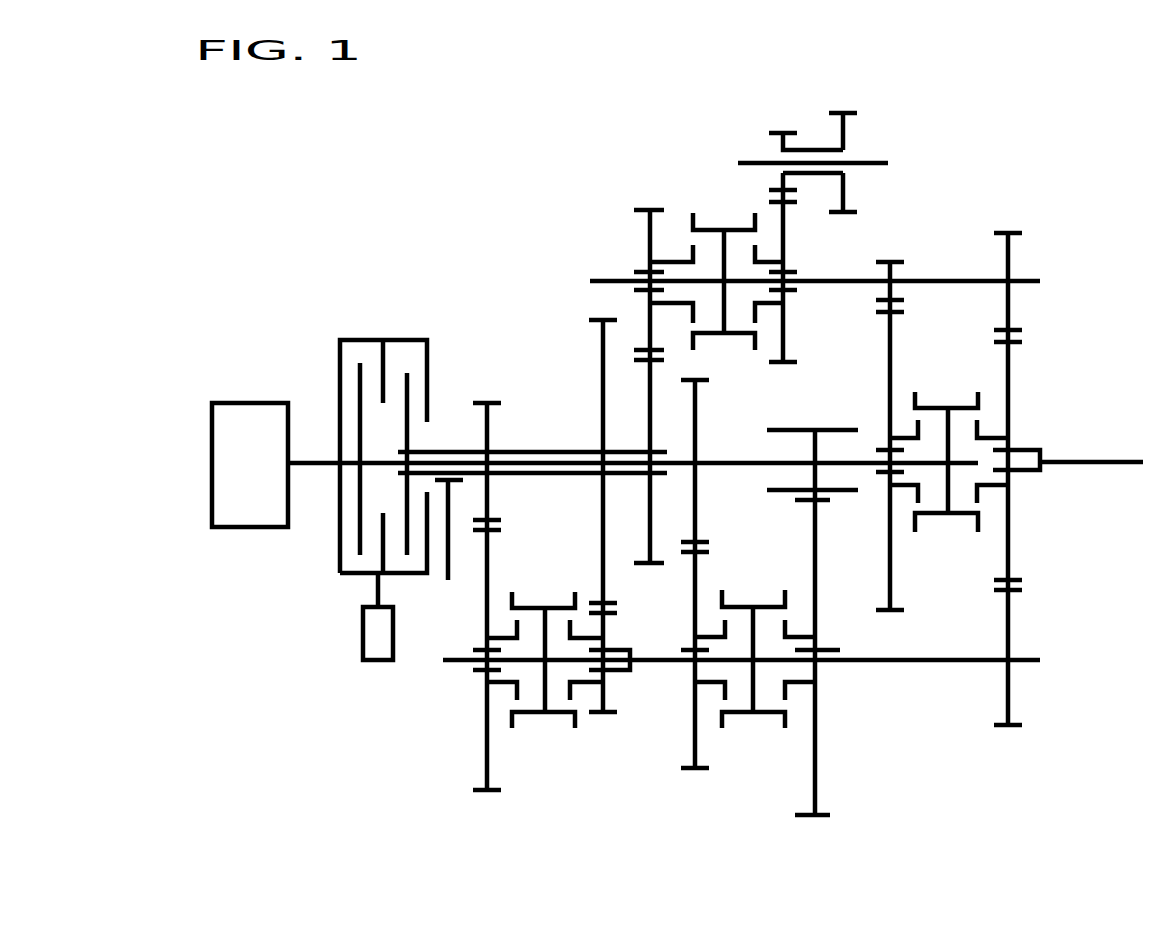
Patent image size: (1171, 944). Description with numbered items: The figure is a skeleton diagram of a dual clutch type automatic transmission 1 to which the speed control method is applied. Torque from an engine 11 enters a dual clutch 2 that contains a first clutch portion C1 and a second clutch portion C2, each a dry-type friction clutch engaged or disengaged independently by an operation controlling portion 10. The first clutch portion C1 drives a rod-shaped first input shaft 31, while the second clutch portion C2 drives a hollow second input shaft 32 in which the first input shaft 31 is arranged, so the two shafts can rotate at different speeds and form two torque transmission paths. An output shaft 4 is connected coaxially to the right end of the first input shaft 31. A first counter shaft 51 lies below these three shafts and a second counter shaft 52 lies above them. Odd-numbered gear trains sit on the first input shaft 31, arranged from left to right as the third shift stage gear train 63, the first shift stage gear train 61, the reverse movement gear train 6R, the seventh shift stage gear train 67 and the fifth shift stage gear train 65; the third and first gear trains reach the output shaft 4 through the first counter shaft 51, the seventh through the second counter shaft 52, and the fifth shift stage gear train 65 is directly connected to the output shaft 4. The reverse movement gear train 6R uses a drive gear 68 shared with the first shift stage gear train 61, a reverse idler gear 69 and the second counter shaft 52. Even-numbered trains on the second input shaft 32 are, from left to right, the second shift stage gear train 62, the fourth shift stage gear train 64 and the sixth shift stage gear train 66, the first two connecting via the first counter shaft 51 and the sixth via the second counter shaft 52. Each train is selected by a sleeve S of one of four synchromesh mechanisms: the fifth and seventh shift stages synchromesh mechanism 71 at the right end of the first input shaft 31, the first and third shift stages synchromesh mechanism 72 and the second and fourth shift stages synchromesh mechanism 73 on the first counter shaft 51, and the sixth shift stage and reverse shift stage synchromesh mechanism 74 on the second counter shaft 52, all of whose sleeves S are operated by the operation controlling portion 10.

The dual clutch type automatic transmission 1 is at (536, 199).
The dual clutch 2 is at (337, 396).
The output shaft 4 is at (1103, 455).
The operation controlling portion 10 is at (394, 655).
The engine 11 is at (247, 402).
The first input shaft 31 is at (736, 457).
The second input shaft 32 is at (552, 450).
The first counter shaft 51 is at (920, 665).
The second counter shaft 52 is at (947, 279).
The first shift stage gear train 61 is at (815, 833).
The second shift stage gear train 62 is at (487, 810).
The third shift stage gear train 63 is at (695, 785).
The fourth shift stage gear train 64 is at (605, 722).
The fifth shift stage gear train 65 is at (990, 416).
The sixth shift stage gear train 66 is at (652, 200).
The seventh shift stage gear train 67 is at (893, 247).
The drive gear 68 is at (827, 428).
The reverse idler gear 69 is at (852, 110).
The reverse movement gear train 6R is at (787, 108).
The fifth and seventh shift stages synchromesh mechanism 71 is at (949, 400).
The first and third shift stages synchromesh mechanism 72 is at (753, 600).
The second and fourth shift stages synchromesh mechanism 73 is at (544, 600).
The sixth shift stage and reverse shift stage synchromesh mechanism 74 is at (725, 211).
The first clutch portion C1 is at (369, 334).
The second clutch portion C2 is at (416, 334).
The sleeve S is at (733, 337).